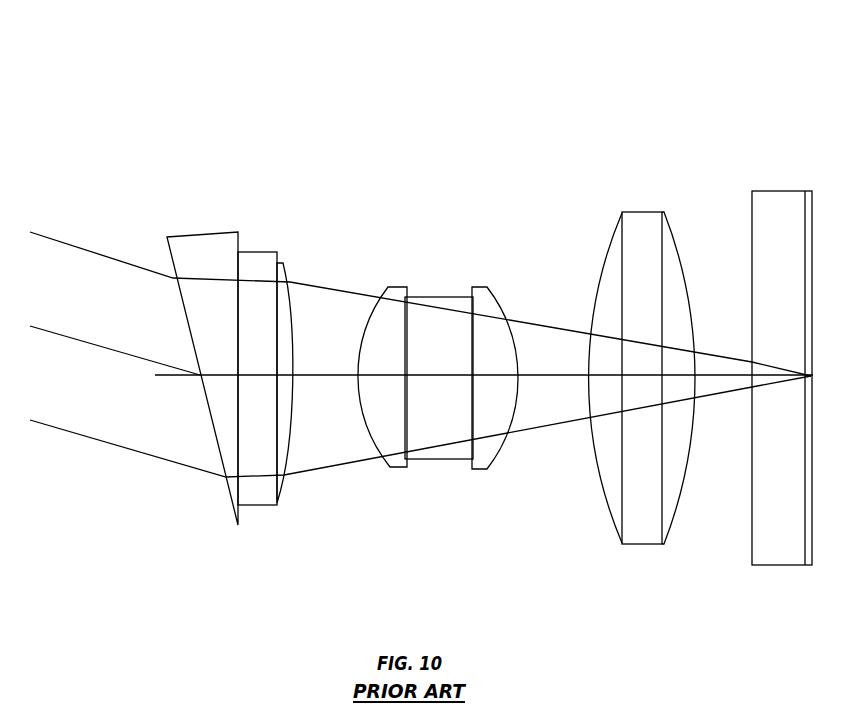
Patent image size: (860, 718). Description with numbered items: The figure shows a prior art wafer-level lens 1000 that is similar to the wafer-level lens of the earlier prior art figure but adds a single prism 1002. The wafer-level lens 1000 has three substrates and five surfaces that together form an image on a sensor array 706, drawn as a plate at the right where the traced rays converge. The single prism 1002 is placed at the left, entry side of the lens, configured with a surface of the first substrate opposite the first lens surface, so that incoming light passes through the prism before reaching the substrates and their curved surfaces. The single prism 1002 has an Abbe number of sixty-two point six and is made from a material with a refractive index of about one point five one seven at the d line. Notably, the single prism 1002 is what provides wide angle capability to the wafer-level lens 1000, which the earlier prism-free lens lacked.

The wafer-level lens 1000 is at (108, 57).
The single prism 1002 is at (198, 247).
The sensor array 706 is at (782, 197).